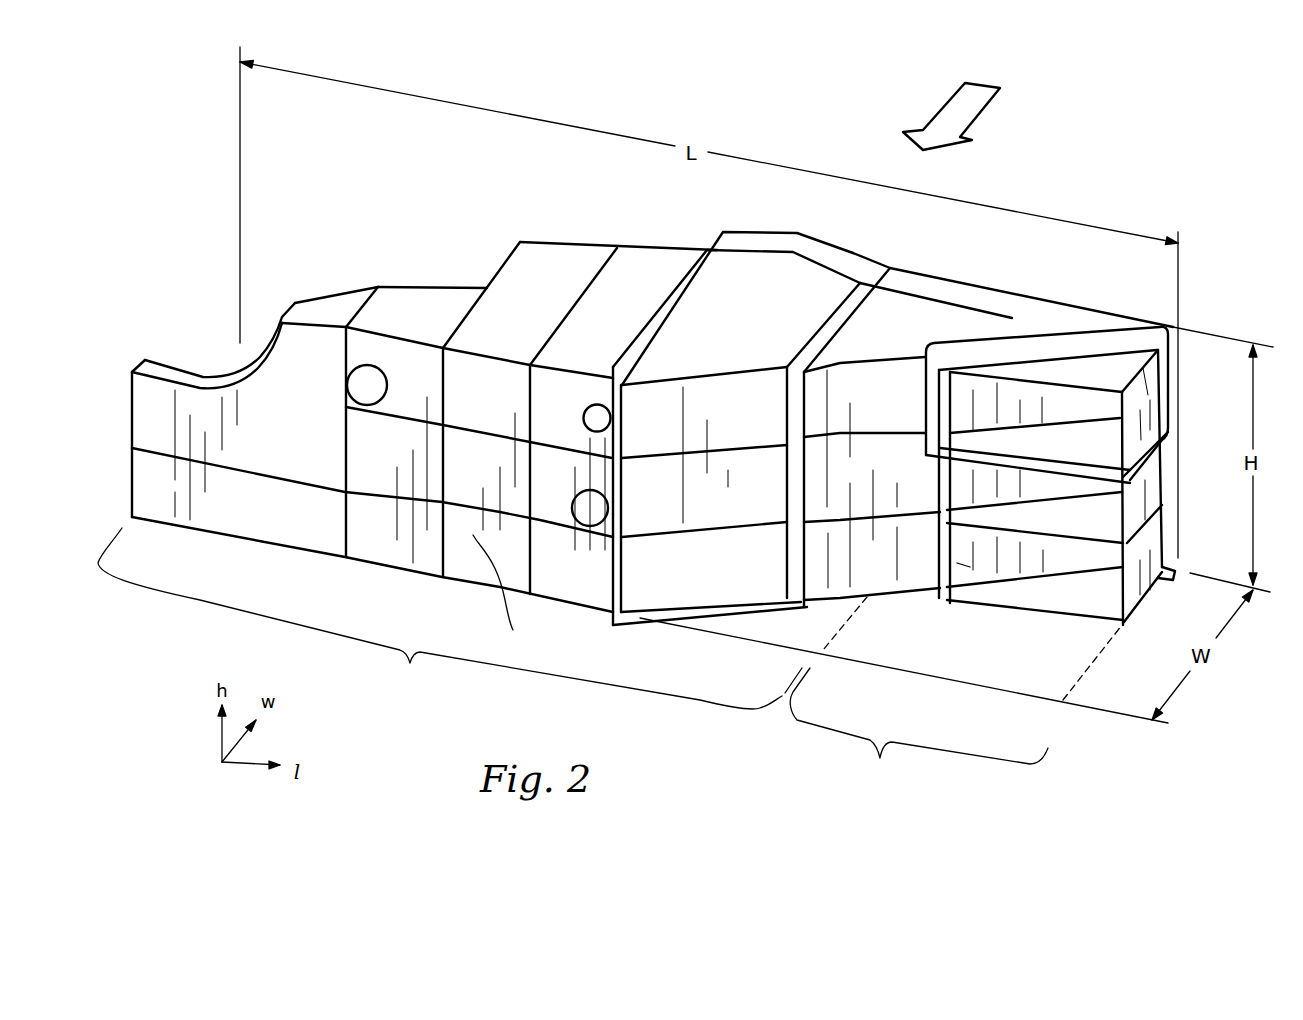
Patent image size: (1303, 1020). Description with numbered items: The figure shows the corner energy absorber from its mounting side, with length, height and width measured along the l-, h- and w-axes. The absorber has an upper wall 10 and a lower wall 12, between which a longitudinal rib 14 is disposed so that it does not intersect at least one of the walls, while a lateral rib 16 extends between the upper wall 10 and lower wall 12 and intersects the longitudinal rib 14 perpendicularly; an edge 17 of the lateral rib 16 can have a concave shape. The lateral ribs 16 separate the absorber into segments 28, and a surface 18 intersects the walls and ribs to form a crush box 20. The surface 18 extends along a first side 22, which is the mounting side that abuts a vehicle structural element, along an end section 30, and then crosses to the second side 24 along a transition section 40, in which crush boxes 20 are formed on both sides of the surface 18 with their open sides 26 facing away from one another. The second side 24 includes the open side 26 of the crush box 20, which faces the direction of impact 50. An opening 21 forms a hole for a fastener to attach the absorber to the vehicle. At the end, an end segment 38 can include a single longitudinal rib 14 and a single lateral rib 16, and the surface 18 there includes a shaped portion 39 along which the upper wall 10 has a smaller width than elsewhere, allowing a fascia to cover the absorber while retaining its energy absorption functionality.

The upper wall 10 is at (563, 263).
The lower wall 12 is at (1017, 590).
The longitudinal rib 14 is at (1043, 518).
The lateral rib 16 is at (957, 567).
The edge 17 is at (740, 605).
The surface 18 is at (470, 533).
The crush box 20 is at (1007, 337).
The opening 21 is at (373, 380).
The first side 22 is at (392, 588).
The second side 24 is at (923, 270).
The open side 26 is at (1020, 403).
The segment 28 is at (663, 305).
The end section 30 is at (440, 618).
The end segment 38 is at (272, 450).
The shaped portion 39 is at (172, 370).
The transition section 40 is at (916, 730).
The direction of impact 50 is at (958, 105).